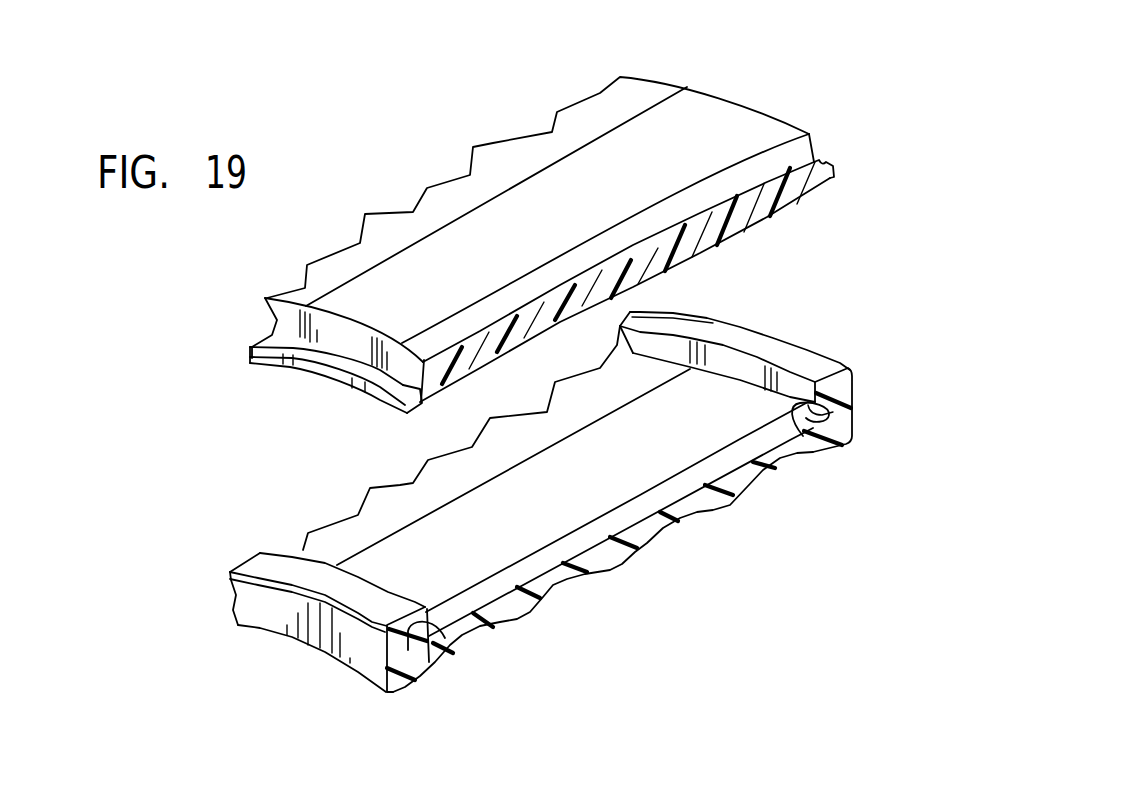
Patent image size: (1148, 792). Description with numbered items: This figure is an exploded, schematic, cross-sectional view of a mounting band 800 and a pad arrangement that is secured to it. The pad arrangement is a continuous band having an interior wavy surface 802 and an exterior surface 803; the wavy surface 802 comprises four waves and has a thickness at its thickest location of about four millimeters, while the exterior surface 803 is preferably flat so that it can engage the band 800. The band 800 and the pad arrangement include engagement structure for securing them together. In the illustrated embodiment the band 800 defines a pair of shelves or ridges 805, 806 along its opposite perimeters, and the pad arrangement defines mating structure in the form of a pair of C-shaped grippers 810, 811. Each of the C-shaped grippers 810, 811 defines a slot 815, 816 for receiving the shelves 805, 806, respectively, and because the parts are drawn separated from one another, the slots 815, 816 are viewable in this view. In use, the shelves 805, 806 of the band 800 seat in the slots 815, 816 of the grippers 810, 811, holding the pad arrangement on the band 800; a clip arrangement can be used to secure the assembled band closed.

The mounting band 800 is at (720, 120).
The interior wavy surface 802 is at (514, 623).
The exterior surface 803 is at (588, 540).
The shelf 805 is at (330, 358).
The shelf 806 is at (825, 163).
The C-shaped gripper 810 is at (317, 575).
The C-shaped gripper 811 is at (762, 347).
The slot 815 is at (445, 638).
The slot 816 is at (803, 436).